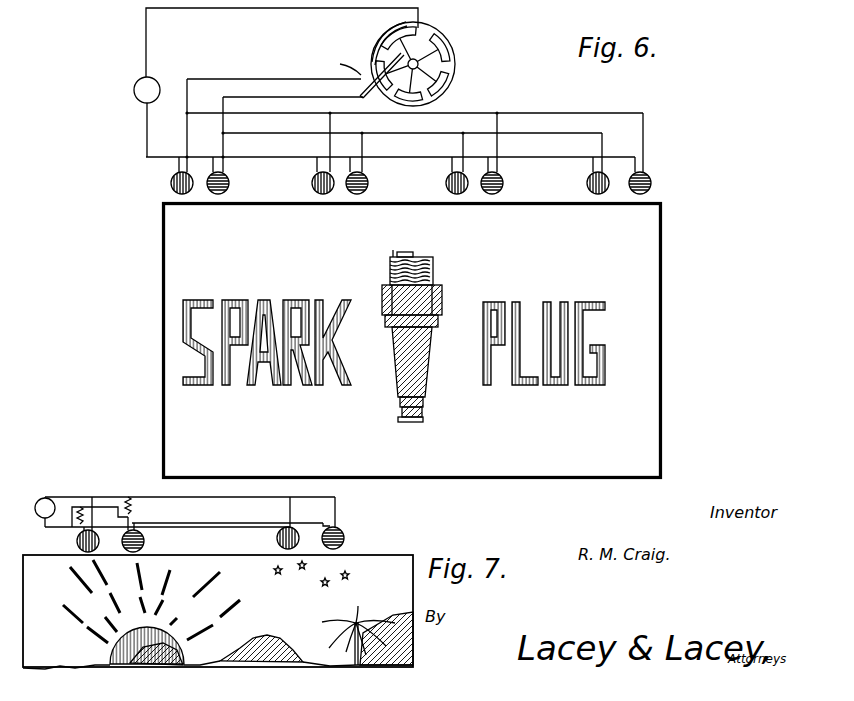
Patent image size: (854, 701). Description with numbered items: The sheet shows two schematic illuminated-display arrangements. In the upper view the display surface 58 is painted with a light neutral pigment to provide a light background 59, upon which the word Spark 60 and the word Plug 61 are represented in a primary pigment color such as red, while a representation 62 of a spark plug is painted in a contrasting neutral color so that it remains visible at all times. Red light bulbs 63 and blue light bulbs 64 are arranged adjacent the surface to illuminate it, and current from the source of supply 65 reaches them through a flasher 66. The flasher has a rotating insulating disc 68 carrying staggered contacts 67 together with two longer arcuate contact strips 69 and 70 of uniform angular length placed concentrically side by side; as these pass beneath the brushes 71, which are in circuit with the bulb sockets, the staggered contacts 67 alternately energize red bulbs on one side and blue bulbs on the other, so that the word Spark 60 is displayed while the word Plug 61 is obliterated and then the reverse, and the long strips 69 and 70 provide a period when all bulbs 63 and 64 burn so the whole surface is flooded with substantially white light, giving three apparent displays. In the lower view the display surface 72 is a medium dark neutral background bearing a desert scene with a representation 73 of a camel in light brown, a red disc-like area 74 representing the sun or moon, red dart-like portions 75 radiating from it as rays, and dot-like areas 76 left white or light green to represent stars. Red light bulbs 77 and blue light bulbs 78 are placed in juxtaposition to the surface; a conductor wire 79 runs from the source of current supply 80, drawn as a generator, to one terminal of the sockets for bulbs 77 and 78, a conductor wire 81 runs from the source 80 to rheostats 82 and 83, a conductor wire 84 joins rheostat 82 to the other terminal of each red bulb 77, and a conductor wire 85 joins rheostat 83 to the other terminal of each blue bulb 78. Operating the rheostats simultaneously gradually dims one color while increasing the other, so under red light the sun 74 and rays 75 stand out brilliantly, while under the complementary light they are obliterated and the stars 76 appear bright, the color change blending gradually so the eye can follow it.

In FIG. 6, the display surface 58 is at (642, 264).
In FIG. 6, the light background 59 is at (650, 356).
In FIG. 6, the word Spark 60 is at (242, 300).
In FIG. 6, the word Plug 61 is at (518, 302).
In FIG. 6, the representation of a spark plug 62 is at (442, 294).
In FIG. 6, the red light bulbs 63 is at (171, 184).
In FIG. 6, the blue light bulbs 64 is at (229, 185).
In FIG. 6, the source of supply 65 is at (152, 78).
In FIG. 6, the flasher 66 is at (448, 74).
In FIG. 6, the staggered contacts 67 is at (440, 40).
In FIG. 6, the rotating insulating disc 68 is at (453, 89).
In FIG. 6, the arcuate contact strip 69 is at (376, 48).
In FIG. 6, the arcuate contact strip 70 is at (390, 27).
In FIG. 6, the brushes 71 is at (341, 66).
In FIG. 7, the display surface 72 is at (399, 569).
In FIG. 7, the representation of a camel 73 is at (274, 640).
In FIG. 7, the disc-like area 74 is at (142, 654).
In FIG. 7, the dart-like portions 75 is at (186, 608).
In FIG. 7, the dot-like areas 76 is at (345, 580).
In FIG. 7, the red light bulbs 77 is at (77, 542).
In FIG. 7, the blue light bulbs 78 is at (144, 541).
In FIG. 7, the conductor wire 79 is at (64, 495).
In FIG. 7, the generator 80 is at (40, 500).
In FIG. 7, the conductor wire 81 is at (84, 506).
In FIG. 7, the rheostat 82 is at (72, 526).
In FIG. 7, the rheostat 83 is at (128, 497).
In FIG. 7, the conductor wire 84 is at (112, 530).
In FIG. 7, the conductor wire 85 is at (224, 522).